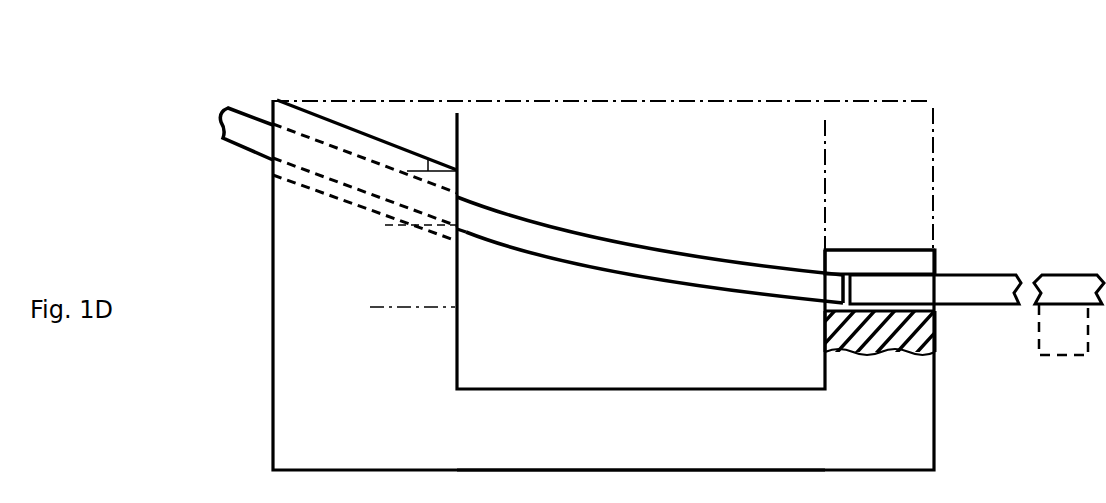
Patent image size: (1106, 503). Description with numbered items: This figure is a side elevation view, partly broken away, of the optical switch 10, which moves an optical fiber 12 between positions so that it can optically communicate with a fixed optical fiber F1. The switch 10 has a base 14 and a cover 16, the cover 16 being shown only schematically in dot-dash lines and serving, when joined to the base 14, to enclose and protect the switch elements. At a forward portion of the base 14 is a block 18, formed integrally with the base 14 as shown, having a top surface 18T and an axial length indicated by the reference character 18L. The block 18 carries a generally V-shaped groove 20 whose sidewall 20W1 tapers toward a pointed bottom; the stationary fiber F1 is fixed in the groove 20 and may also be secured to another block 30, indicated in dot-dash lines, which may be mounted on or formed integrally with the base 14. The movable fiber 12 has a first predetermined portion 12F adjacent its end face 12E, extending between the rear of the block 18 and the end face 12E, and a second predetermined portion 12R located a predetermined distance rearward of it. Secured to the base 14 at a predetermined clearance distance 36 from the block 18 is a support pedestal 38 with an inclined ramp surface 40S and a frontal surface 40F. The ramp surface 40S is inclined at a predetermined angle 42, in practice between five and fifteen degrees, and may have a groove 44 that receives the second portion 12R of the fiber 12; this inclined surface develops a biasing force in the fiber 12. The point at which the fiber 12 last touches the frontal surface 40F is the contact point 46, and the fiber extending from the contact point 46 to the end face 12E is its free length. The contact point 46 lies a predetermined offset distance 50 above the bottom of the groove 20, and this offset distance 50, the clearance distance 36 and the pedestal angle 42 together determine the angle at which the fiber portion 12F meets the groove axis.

The switch 10 is at (972, 163).
The optical fiber 12 is at (503, 201).
The second predetermined portion of the fiber 12R is at (322, 135).
The first predetermined portion of the fiber 12F is at (832, 278).
The end face of the fiber 12E is at (470, 498).
The base 14 is at (606, 424).
The cover 16 is at (632, 96).
The block portion 18 is at (895, 428).
The top surface of the block 18T is at (872, 250).
The axial length of the block 18L is at (933, 375).
The groove 20 is at (797, 498).
The sidewall of the groove 20W1 is at (906, 258).
The block 30 is at (1088, 328).
The predetermined distance 36 is at (820, 133).
The support pedestal 38 is at (296, 384).
The ramp surface 40S is at (358, 132).
The frontal surface 40F is at (460, 342).
The angle 42 is at (422, 166).
The groove 44 is at (310, 189).
The contact point 46 is at (462, 235).
The offset distance 50 is at (400, 226).
The fixed optical fiber F1 is at (1052, 293).